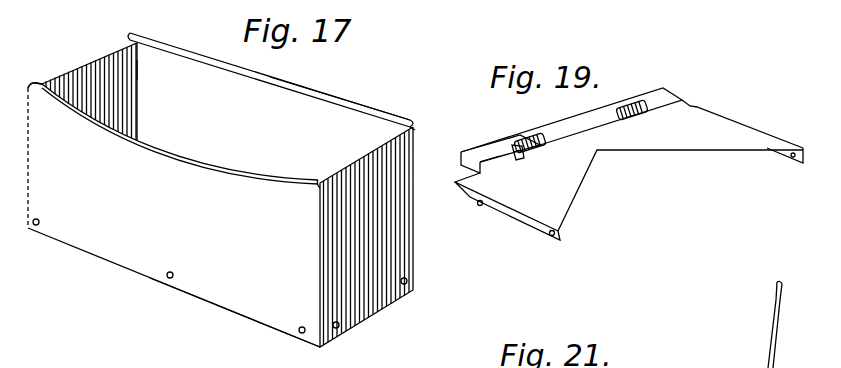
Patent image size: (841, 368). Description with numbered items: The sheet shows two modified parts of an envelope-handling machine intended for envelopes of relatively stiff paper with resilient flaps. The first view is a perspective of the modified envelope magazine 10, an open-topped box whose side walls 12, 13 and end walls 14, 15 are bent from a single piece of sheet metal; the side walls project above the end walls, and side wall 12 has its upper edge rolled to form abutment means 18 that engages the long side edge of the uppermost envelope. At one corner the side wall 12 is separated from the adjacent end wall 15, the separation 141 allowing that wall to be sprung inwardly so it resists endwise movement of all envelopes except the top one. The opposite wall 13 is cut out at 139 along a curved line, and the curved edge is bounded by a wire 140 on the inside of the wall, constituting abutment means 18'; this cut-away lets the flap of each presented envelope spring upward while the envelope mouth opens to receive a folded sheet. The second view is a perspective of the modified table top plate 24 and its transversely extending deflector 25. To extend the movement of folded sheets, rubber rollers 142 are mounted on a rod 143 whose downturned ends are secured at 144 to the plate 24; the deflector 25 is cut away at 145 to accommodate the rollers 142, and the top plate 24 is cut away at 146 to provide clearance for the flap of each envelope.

In FIG. 17, the magazine 10 is at (109, 266).
In FIG. 17, the side wall 12 is at (247, 86).
In FIG. 17, the side wall 13 is at (222, 292).
In FIG. 17, the end wall 14 is at (408, 222).
In FIG. 17, the end wall 15 is at (104, 60).
In FIG. 17, the abutment means 18 is at (340, 98).
In FIG. 17, the abutment means 18' is at (32, 66).
In FIG. 17, the cut out 139 is at (156, 157).
In FIG. 17, the wire 140 is at (202, 170).
In FIG. 17, the separation 141 is at (138, 68).
In FIG. 19, the top plate 24 is at (540, 212).
In FIG. 19, the deflector 25 is at (478, 150).
In FIG. 19, the rubber rollers 142 is at (537, 149).
In FIG. 19, the rod 143 is at (575, 122).
In FIG. 19, the securing points 144 is at (690, 110).
In FIG. 19, the cut away 145 is at (516, 145).
In FIG. 19, the cut away 146 is at (733, 148).